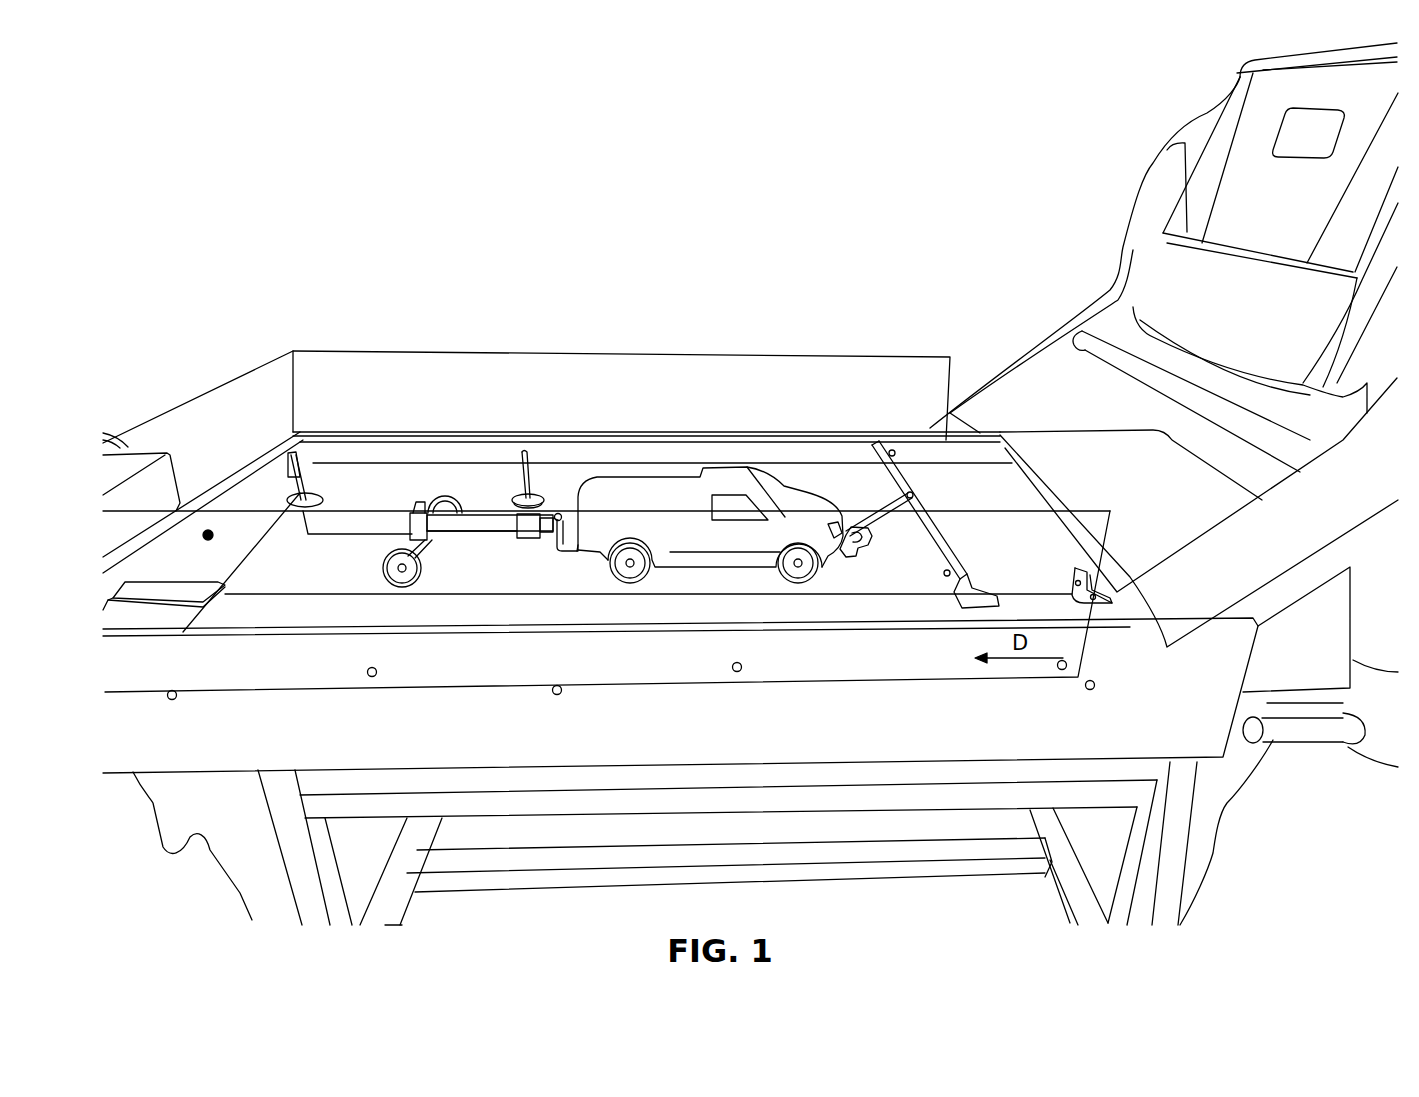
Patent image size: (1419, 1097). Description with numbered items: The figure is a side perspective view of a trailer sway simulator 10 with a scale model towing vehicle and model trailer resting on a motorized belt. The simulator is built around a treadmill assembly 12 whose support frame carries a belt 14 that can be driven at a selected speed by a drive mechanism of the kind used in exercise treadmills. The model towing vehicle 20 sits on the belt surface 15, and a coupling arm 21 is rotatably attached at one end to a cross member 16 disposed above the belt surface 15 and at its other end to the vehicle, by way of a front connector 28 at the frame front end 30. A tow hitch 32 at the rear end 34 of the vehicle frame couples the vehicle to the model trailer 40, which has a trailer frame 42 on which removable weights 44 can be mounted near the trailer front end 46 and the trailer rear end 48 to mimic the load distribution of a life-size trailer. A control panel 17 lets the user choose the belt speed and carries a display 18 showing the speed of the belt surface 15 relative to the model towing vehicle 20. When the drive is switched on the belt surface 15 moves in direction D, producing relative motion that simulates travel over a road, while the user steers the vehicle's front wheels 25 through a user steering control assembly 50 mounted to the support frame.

The trailer sway simulator 10 is at (413, 250).
The treadmill assembly 12 is at (945, 473).
The belt 14 is at (995, 488).
The belt surface 15 is at (830, 485).
The cross member 16 is at (893, 453).
The control panel 17 is at (1230, 188).
The display 18 is at (1298, 127).
The model towing vehicle 20 is at (672, 557).
The coupling arm 21 is at (872, 505).
The front wheels 25 is at (802, 573).
The front connector 28 is at (860, 552).
The frame front end 30 is at (833, 562).
The tow hitch 32 is at (563, 553).
The rear end 34 is at (593, 555).
The model trailer 40 is at (432, 507).
The trailer frame 42 is at (467, 525).
The removable weights 44 is at (313, 497).
The trailer front end 46 is at (492, 528).
The trailer rear end 48 is at (370, 530).
The user steering control assembly 50 is at (137, 473).